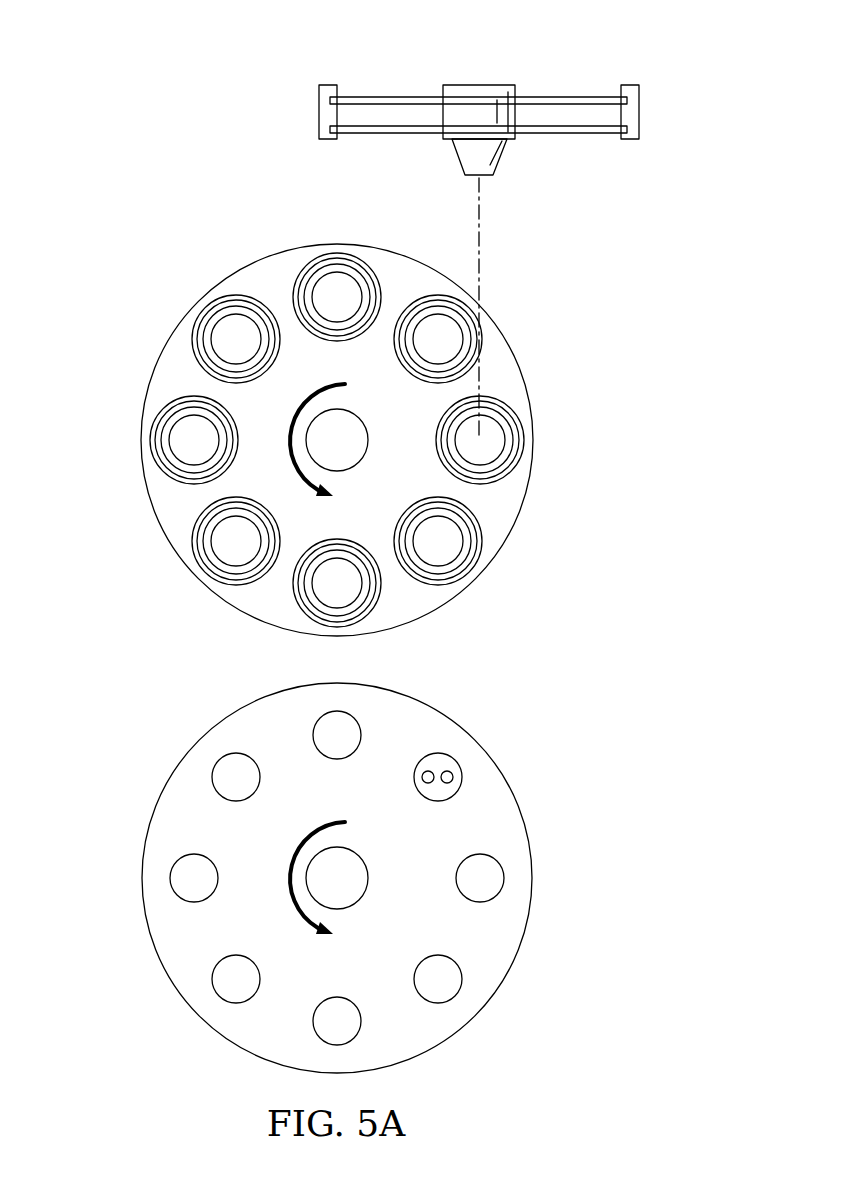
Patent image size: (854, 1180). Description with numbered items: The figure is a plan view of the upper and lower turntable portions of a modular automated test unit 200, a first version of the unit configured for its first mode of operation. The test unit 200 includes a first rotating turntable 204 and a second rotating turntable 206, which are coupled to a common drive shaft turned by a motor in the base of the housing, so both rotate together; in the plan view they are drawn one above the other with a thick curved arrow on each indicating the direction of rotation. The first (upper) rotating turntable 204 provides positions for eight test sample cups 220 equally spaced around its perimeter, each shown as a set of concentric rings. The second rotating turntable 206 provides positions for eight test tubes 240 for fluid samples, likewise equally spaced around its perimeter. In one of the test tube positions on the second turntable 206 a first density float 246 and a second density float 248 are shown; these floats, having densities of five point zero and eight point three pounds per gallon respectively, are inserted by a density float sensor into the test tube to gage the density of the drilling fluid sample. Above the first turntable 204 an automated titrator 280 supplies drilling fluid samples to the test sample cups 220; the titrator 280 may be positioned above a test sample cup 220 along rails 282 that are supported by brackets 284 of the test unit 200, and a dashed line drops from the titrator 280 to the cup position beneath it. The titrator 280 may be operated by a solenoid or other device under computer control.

The test unit 200 is at (125, 62).
The first rotating turntable 204 is at (258, 262).
The second rotating turntable 206 is at (218, 723).
The test sample cups 220 is at (357, 308).
The test tubes 240 is at (193, 862).
The first density float 246 is at (452, 768).
The second density float 248 is at (428, 785).
The automated titrator 280 is at (480, 85).
The rails 282 is at (570, 97).
The brackets 284 is at (319, 112).